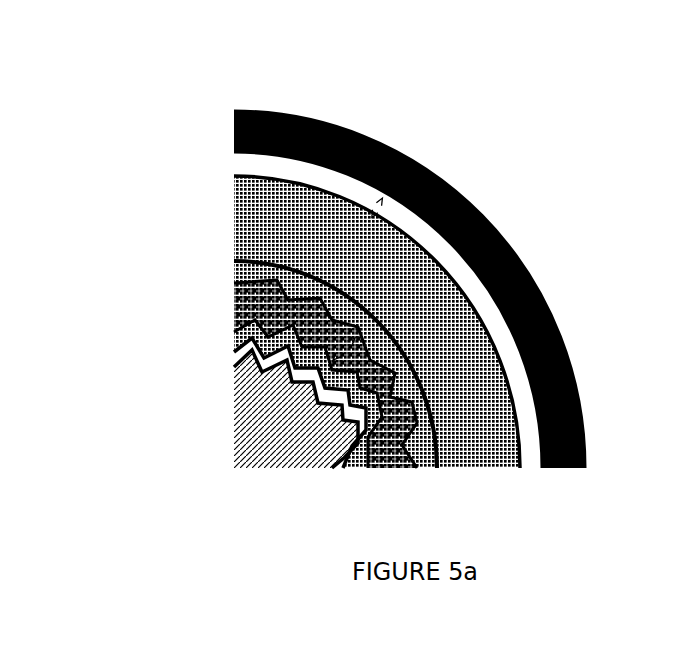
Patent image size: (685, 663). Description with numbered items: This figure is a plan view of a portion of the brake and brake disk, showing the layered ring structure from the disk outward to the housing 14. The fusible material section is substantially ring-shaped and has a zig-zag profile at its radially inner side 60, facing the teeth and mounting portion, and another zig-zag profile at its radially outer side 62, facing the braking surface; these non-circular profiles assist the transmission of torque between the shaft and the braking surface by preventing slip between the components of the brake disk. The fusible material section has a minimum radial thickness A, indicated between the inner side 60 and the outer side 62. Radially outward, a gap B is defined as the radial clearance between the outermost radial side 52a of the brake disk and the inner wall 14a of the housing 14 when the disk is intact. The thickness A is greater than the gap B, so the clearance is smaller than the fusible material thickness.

The housing 14 is at (550, 320).
The inner wall of the housing 14a is at (534, 398).
The outermost radial side of the brake disk 52a is at (293, 180).
The radially inner side 60 is at (333, 466).
The radially outer side 62 is at (413, 430).
The minimum radial thickness A is at (333, 360).
The gap B is at (372, 217).